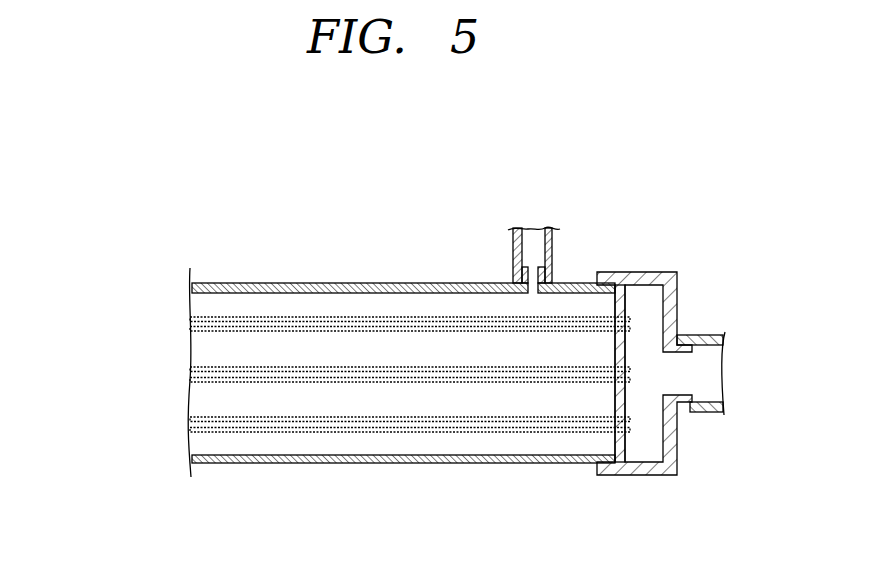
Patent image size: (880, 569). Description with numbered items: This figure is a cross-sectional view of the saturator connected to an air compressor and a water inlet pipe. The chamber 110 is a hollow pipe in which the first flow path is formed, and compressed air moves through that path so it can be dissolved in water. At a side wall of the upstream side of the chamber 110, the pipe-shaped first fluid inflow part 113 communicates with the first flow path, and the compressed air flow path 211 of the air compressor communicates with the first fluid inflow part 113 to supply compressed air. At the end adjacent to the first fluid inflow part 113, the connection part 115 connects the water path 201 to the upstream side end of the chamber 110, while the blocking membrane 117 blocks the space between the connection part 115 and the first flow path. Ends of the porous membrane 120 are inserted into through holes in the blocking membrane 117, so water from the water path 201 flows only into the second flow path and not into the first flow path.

The chamber 110 is at (273, 290).
The first fluid inflow part 113 is at (518, 280).
The connection part 115 is at (682, 399).
The blocking membrane 117 is at (622, 447).
The porous membrane 120 is at (190, 422).
The water path 201 is at (696, 337).
The compressed air flow path 211 is at (552, 243).